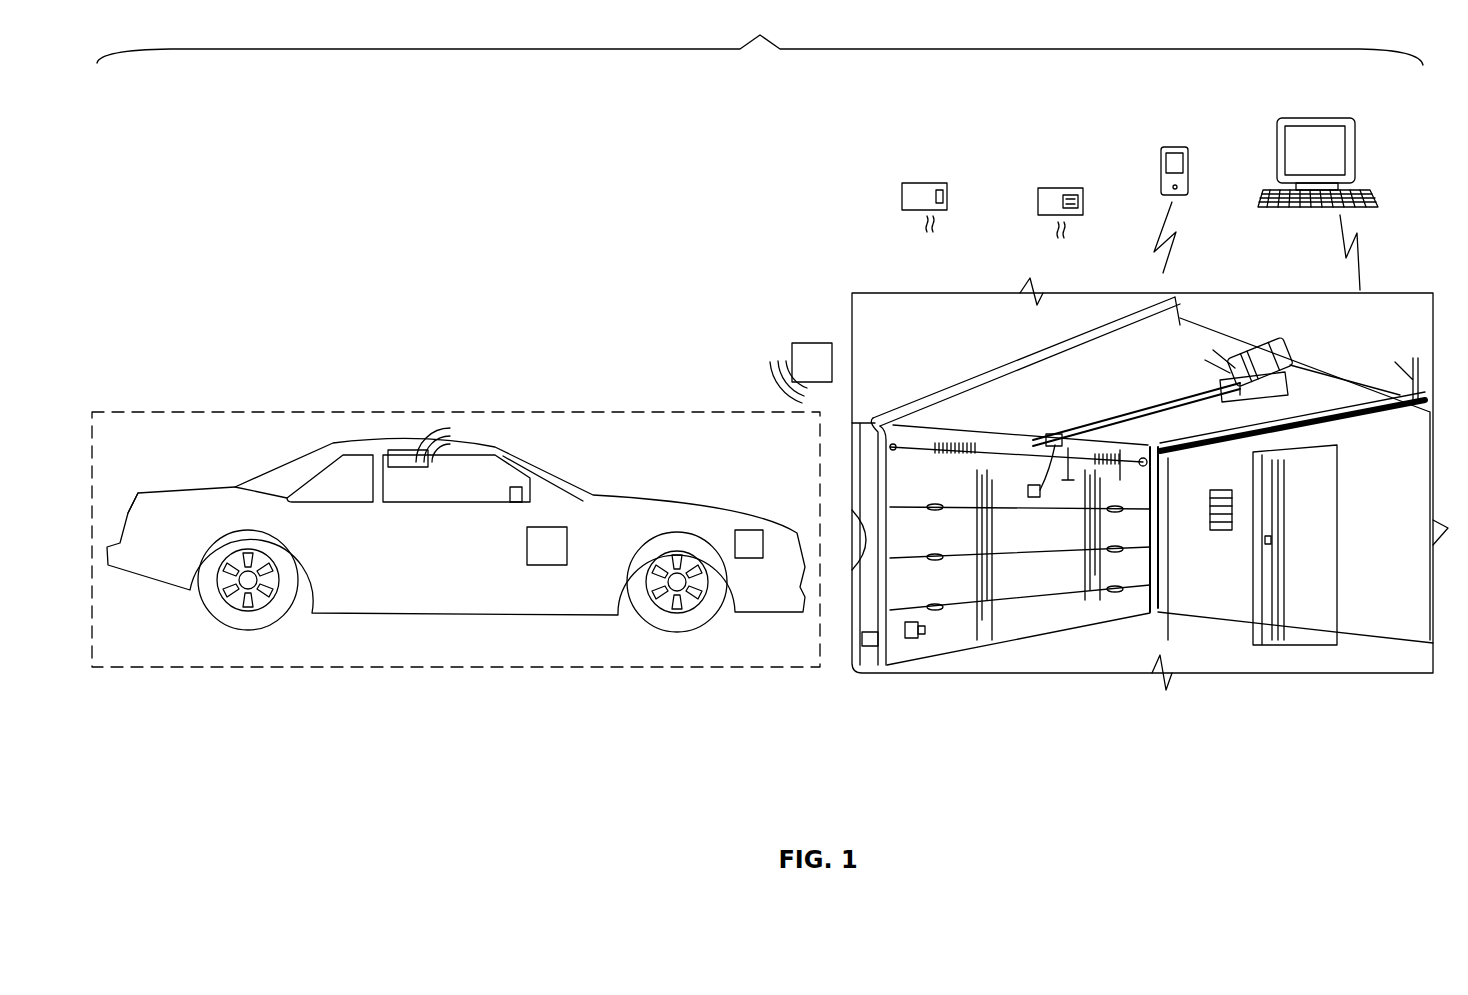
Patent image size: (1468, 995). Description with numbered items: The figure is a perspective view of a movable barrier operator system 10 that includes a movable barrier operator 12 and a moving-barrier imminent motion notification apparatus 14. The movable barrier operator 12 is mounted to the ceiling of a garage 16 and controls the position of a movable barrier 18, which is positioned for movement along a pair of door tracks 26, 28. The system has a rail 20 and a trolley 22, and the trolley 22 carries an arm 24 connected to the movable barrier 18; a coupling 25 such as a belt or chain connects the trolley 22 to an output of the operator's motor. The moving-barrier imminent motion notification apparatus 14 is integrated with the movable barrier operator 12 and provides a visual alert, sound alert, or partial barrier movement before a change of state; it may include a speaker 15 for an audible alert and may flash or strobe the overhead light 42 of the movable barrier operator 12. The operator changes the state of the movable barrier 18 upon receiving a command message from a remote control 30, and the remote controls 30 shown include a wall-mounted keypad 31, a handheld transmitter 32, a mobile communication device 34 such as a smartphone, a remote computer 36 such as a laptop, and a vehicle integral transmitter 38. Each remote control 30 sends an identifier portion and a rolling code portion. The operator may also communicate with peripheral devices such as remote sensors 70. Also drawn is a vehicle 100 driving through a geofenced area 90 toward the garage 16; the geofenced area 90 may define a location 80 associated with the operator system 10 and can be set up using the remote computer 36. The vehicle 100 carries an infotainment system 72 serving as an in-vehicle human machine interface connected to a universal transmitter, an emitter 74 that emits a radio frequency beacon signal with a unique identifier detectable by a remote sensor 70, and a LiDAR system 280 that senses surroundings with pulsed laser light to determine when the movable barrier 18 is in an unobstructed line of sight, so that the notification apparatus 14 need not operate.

The movable barrier operator system 10 is at (1385, 158).
The movable barrier operator 12 is at (1268, 352).
The moving-barrier imminent motion notification apparatus 14 is at (1280, 405).
The speaker 15 is at (1337, 443).
The garage 16 is at (1215, 665).
The movable barrier 18 is at (958, 585).
The rail 20 is at (1143, 405).
The trolley 22 is at (1058, 435).
The arm 24 is at (1040, 438).
The coupling 25 is at (1122, 450).
The door track 26 is at (1020, 355).
The door track 28 is at (1352, 400).
The remote control 30 is at (893, 198).
The wall-mounted keypad 31 is at (1217, 532).
The handheld transmitter 32 is at (1068, 187).
The mobile communication device 34 is at (516, 503).
The remote computer 36 is at (1310, 118).
The vehicle integral transmitter 38 is at (920, 210).
The overhead light 42 is at (1235, 400).
The remote sensor 70 is at (800, 343).
The infotainment system 72 is at (540, 568).
The emitter 74 is at (398, 452).
The location 80 is at (222, 425).
The geofenced area 90 is at (113, 412).
The vehicle 100 is at (138, 493).
The LiDAR system 280 is at (752, 540).